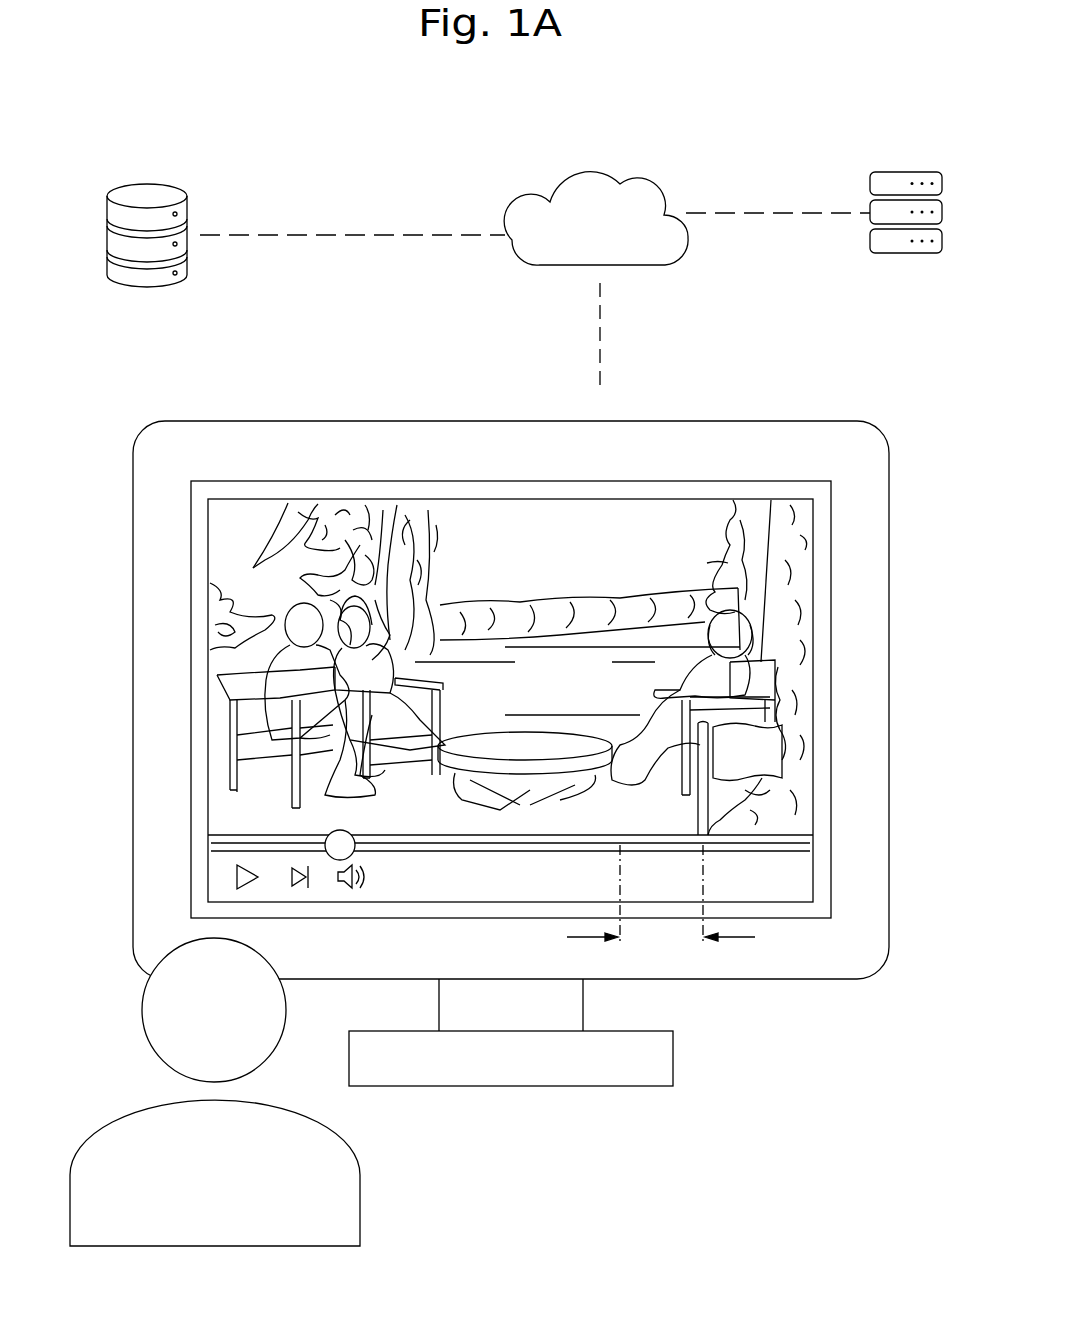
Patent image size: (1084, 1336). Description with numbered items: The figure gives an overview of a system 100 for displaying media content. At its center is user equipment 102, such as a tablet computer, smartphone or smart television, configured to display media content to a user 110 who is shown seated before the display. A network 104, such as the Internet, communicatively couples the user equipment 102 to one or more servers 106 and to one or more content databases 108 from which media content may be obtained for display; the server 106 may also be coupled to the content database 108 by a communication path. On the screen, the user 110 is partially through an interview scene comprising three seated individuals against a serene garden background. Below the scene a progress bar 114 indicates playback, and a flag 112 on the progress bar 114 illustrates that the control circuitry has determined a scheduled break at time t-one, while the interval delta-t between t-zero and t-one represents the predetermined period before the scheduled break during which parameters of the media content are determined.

The system 100 is at (238, 75).
The user equipment 102 is at (333, 410).
The network 104 is at (525, 210).
The server 106 is at (909, 152).
The content database 108 is at (138, 298).
The user 110 is at (110, 1120).
The flag 112 is at (782, 758).
The progress bar 114 is at (215, 875).